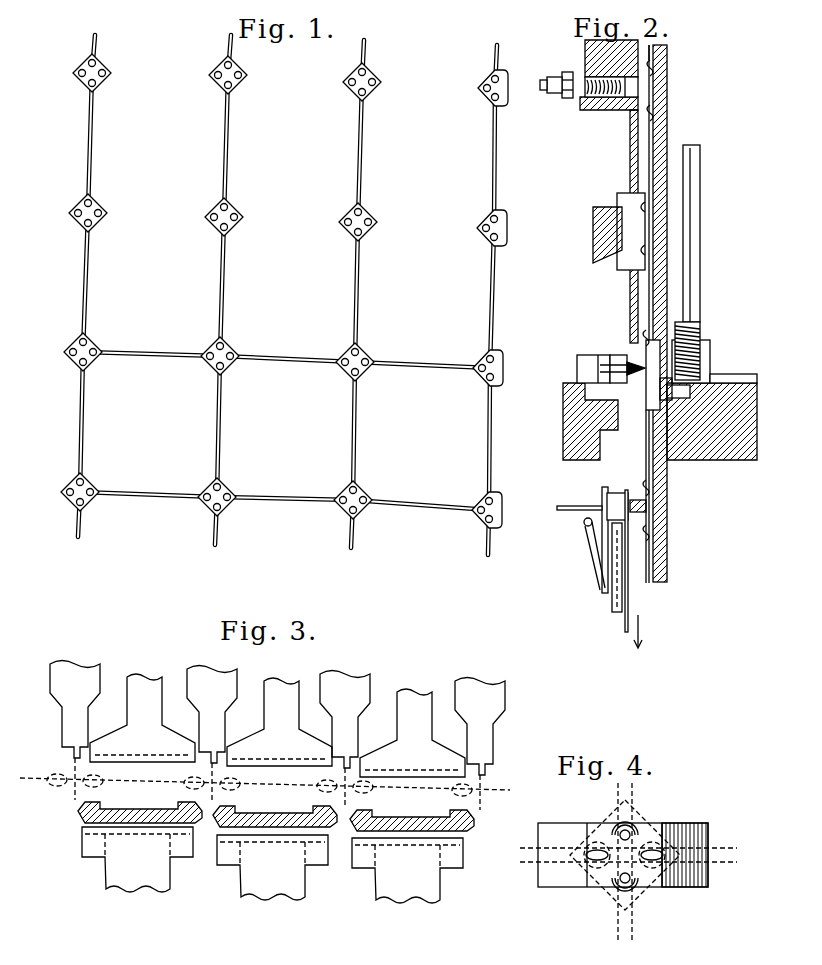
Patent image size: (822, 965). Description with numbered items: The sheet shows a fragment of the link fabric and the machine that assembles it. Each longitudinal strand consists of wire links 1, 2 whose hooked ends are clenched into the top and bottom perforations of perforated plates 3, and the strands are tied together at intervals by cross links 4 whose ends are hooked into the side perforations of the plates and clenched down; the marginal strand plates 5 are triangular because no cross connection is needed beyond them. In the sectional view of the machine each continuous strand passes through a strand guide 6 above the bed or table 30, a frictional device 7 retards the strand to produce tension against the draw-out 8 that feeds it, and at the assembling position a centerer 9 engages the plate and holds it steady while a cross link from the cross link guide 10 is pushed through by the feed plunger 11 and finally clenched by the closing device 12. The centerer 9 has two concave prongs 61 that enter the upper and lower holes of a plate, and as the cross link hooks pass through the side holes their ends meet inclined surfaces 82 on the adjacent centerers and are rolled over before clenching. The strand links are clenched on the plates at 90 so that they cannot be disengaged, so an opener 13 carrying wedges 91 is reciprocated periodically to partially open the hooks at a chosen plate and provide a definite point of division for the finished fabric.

In FIG. 1, the wire link 1 is at (82, 268).
In FIG. 2, the wire link 1 is at (646, 165).
In FIG. 1, the wire link 2 is at (81, 412).
In FIG. 2, the wire link 2 is at (643, 435).
In FIG. 1, the perforated plate 3 is at (352, 90).
In FIG. 2, the perforated plate 3 is at (640, 360).
In FIG. 1, the cross link 4 is at (127, 352).
In FIG. 2, the cross link 4 is at (698, 330).
In FIG. 3, the cross link 4 is at (80, 816).
In FIG. 1, the marginal strand plate 5 is at (486, 100).
In FIG. 2, the strand guide 6 is at (670, 58).
In FIG. 2, the frictional device 7 is at (618, 108).
In FIG. 2, the draw-out 8 is at (632, 514).
In FIG. 2, the centerer 9 is at (612, 362).
In FIG. 3, the centerer 9 is at (277, 718).
In FIG. 4, the centerer 9 is at (603, 880).
In FIG. 2, the cross link guide 10 is at (692, 212).
In FIG. 3, the cross link guide 10 is at (133, 815).
In FIG. 2, the feed plunger 11 is at (732, 374).
In FIG. 3, the feed plunger 11 is at (255, 860).
In FIG. 2, the closing device 12 is at (590, 365).
In FIG. 3, the closing device 12 is at (211, 720).
In FIG. 2, the opener 13 is at (630, 220).
In FIG. 2, the table 30 is at (660, 421).
In FIG. 3, the prong 61 is at (72, 753).
In FIG. 4, the prong 61 is at (634, 829).
In FIG. 3, the inclined surface 82 is at (452, 746).
In FIG. 4, the inclined surface 82 is at (590, 850).
In FIG. 2, the clenched link end 90 is at (653, 100).
In FIG. 2, the wedge 91 is at (632, 205).